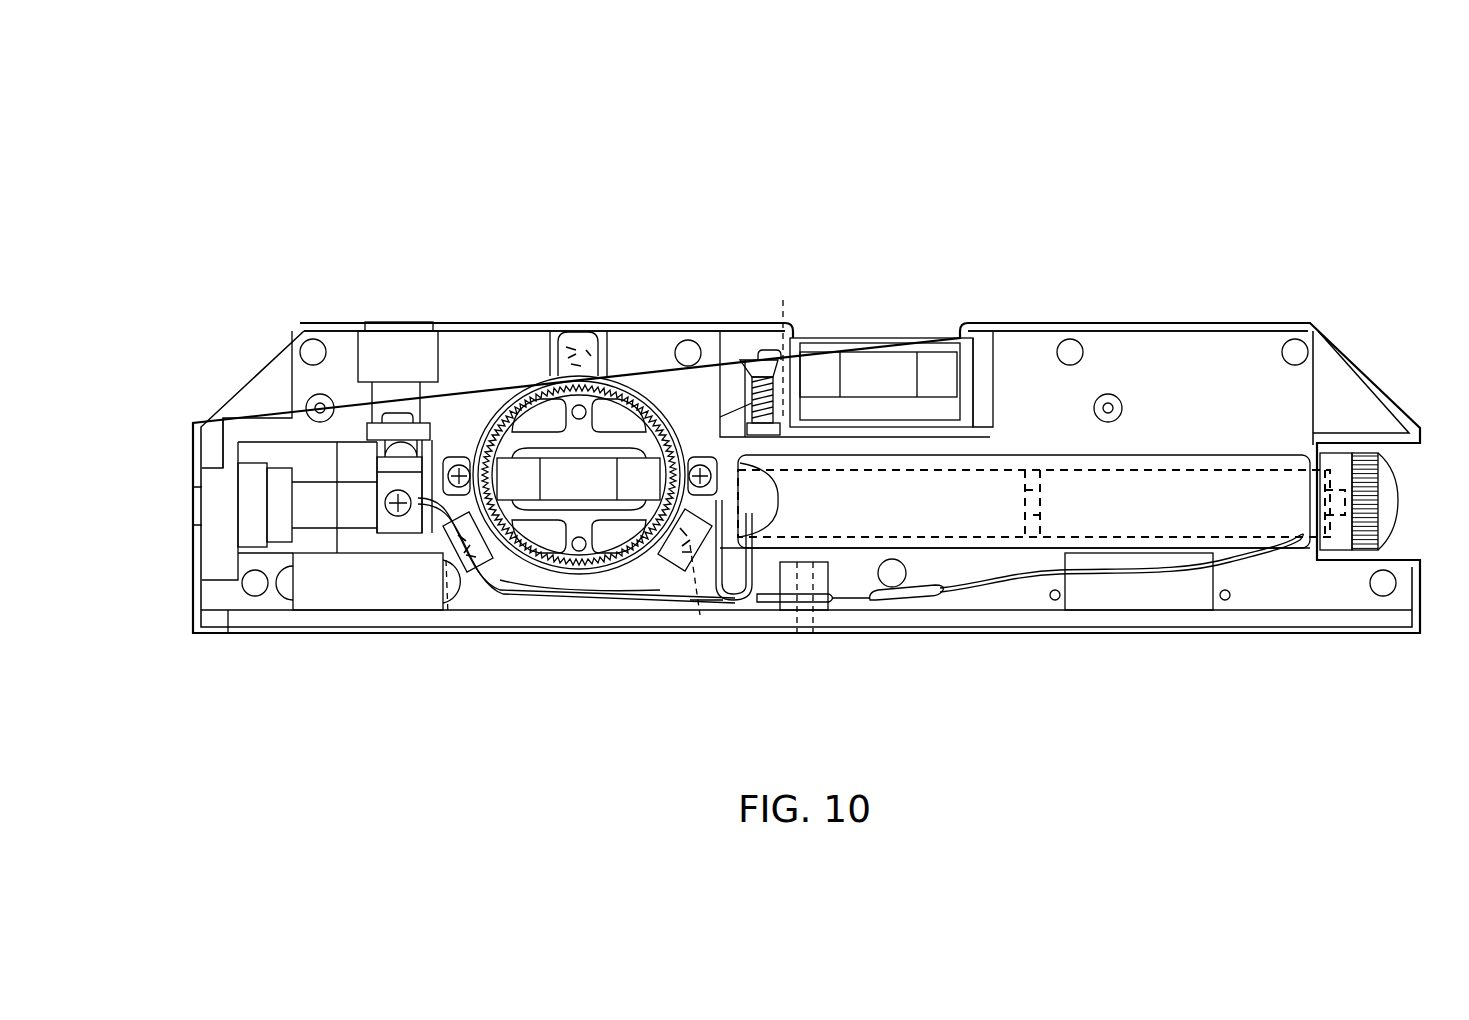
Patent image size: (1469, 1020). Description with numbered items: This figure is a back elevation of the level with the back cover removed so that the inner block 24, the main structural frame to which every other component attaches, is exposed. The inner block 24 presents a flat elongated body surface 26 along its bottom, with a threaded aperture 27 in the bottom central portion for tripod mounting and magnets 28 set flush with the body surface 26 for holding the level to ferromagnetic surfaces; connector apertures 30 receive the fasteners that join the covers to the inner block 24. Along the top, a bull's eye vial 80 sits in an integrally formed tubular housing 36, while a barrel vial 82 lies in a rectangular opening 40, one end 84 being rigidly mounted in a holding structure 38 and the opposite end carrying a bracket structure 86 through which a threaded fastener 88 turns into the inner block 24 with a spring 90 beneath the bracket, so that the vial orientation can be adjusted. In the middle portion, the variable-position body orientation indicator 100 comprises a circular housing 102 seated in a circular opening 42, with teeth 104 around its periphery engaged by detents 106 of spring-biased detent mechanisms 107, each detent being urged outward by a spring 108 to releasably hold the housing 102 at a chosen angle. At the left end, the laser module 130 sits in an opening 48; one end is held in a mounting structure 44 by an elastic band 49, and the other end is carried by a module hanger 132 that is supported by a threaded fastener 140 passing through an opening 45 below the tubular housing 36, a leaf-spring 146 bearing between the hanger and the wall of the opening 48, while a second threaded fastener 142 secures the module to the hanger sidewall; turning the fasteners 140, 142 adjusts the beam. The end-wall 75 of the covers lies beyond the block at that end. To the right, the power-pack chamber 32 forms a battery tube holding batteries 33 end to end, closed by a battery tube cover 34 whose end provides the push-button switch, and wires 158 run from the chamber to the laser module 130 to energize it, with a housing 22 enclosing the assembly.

The housing 22 is at (1327, 333).
The inner block 24 is at (1165, 358).
The body surface 26 is at (1005, 636).
The threaded aperture 27 is at (808, 625).
The magnets 28 is at (420, 595).
The connector apertures 30 is at (310, 345).
The power-pack chamber 32 is at (1032, 462).
The batteries 33 is at (952, 540).
The battery tube cover 34 is at (1400, 497).
The tubular housing 36 is at (456, 378).
The holding structure 38 is at (985, 340).
The rectangular opening 40 is at (726, 360).
The circular opening 42 is at (596, 606).
The mounting structure 44 is at (282, 546).
The opening 45 is at (437, 357).
The opening 48 is at (328, 444).
The elastic band 49 is at (252, 464).
The end-wall 75 is at (198, 486).
The bull's eye vial 80 is at (396, 414).
The barrel vial 82 is at (856, 328).
The end of the vial 84 is at (947, 345).
The bracket structure 86 is at (750, 362).
The threaded fastener 88 is at (786, 349).
The spring 90 is at (752, 392).
The variable-position body orientation indicator 100 is at (636, 372).
The circular housing 102 is at (628, 605).
The teeth 104 is at (533, 395).
The detent 106 is at (605, 333).
The spring-biased detent mechanisms 107 is at (558, 322).
The spring 108 is at (573, 345).
The laser module 130 is at (318, 482).
The module hanger 132 is at (374, 544).
The threaded fastener 140 is at (391, 414).
The threaded fastener 142 is at (402, 516).
The leaf-spring 146 is at (383, 447).
The wires 158 is at (575, 602).